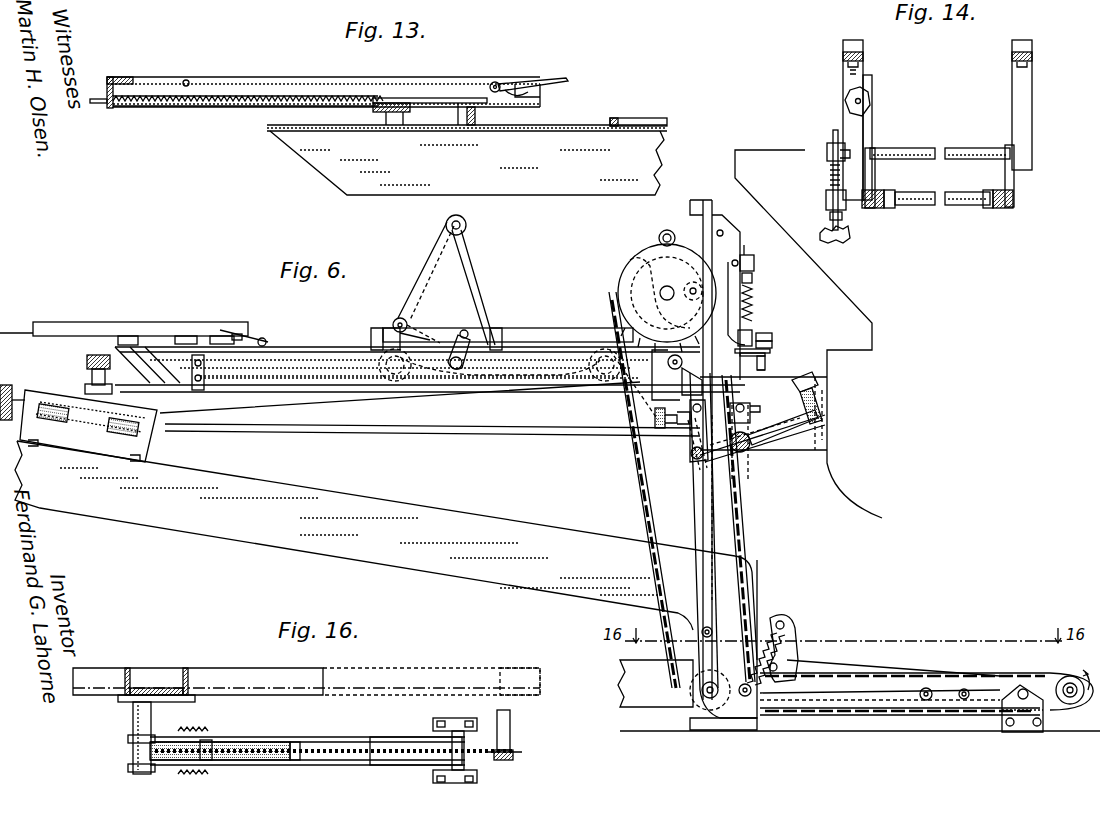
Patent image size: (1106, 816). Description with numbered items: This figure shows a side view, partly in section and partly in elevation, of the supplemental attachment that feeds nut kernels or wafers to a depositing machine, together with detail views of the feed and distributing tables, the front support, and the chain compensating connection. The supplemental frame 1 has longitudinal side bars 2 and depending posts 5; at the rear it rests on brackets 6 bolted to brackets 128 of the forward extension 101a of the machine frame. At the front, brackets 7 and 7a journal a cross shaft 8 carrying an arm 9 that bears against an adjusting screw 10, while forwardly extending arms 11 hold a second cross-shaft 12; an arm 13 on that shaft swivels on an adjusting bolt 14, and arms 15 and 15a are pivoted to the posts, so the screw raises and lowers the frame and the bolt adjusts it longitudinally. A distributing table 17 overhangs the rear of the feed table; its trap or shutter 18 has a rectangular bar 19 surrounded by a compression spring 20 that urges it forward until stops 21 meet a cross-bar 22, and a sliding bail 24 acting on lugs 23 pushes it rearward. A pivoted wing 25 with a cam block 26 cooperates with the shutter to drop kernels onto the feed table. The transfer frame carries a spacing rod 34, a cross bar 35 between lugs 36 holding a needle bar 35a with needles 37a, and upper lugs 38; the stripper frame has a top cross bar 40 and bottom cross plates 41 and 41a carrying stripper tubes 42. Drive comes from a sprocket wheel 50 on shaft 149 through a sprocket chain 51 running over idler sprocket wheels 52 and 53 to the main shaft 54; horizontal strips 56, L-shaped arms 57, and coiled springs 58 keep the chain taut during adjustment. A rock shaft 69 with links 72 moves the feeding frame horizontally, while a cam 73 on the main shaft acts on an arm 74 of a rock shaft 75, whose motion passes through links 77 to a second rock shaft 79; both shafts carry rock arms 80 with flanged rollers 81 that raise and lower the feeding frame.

In FIG. 6, the supplemental frame 1 is at (318, 347).
In FIG. 13, the longitudinal side bars 2 is at (366, 185).
In FIG. 6, the longitudinal side bars 2 is at (292, 372).
In FIG. 14, the depending posts 5 is at (875, 209).
In FIG. 6, the brackets 6 is at (160, 388).
In FIG. 14, the bracket 7 is at (848, 125).
In FIG. 6, the bracket 7 is at (770, 432).
In FIG. 14, the bracket 7a is at (1032, 117).
In FIG. 6, the bracket 7a is at (814, 455).
In FIG. 14, the cross shaft 8 is at (950, 148).
In FIG. 6, the cross shaft 8 is at (742, 455).
In FIG. 14, the arm 9 is at (870, 88).
In FIG. 6, the arm 9 is at (760, 448).
In FIG. 14, the adjusting screw 10 is at (866, 100).
In FIG. 6, the adjusting screw 10 is at (804, 400).
In FIG. 14, the forwardly extending arms 11 is at (872, 178).
In FIG. 6, the forwardly extending arms 11 is at (718, 465).
In FIG. 14, the second cross-shaft 12 is at (930, 206).
In FIG. 6, the second cross-shaft 12 is at (695, 460).
In FIG. 14, the arm 13 is at (846, 215).
In FIG. 14, the adjusting bolt 14 is at (832, 138).
In FIG. 6, the adjusting bolt 14 is at (758, 410).
In FIG. 14, the arm 15 is at (889, 209).
In FIG. 6, the arm 15 is at (690, 445).
In FIG. 14, the arm 15a is at (988, 209).
In FIG. 13, the distributing table 17 is at (240, 79).
In FIG. 6, the distributing table 17 is at (133, 322).
In FIG. 13, the trap or shutter 18 is at (543, 100).
In FIG. 13, the rectangular bar 19 is at (458, 125).
In FIG. 13, the compression spring 20 is at (212, 107).
In FIG. 6, the compression spring 20 is at (28, 326).
In FIG. 13, the stops 21 is at (374, 111).
In FIG. 6, the stops 21 is at (168, 343).
In FIG. 13, the cross-bar 22 is at (410, 106).
In FIG. 6, the cross-bar 22 is at (182, 336).
In FIG. 13, the lugs 23 is at (477, 120).
In FIG. 6, the lugs 23 is at (220, 336).
In FIG. 13, the sliding bail 24 is at (624, 118).
In FIG. 6, the sliding bail 24 is at (204, 347).
In FIG. 13, the pivoted wing 25 is at (530, 86).
In FIG. 6, the pivoted wing 25 is at (248, 332).
In FIG. 13, the cam block 26 is at (540, 89).
In FIG. 6, the cam block 26 is at (240, 347).
In FIG. 6, the spacing rod 34 is at (724, 233).
In FIG. 6, the cross bar 35 is at (773, 337).
In FIG. 6, the needle bar 35a is at (773, 346).
In FIG. 6, the lugs 36 is at (755, 335).
In FIG. 6, the needles 37a is at (763, 370).
In FIG. 6, the lugs 38 is at (755, 262).
In FIG. 6, the top cross bar 40 is at (753, 279).
In FIG. 6, the bottom cross plate 41 is at (741, 354).
In FIG. 6, the bottom cross plate 41a is at (755, 369).
In FIG. 6, the stripper tubes 42 is at (766, 364).
In FIG. 6, the sprocket wheel 50 is at (1055, 684).
In FIG. 16, the sprocket wheel 50 is at (516, 757).
In FIG. 6, the sprocket chain 51 is at (1055, 708).
In FIG. 16, the sprocket chain 51 is at (398, 748).
In FIG. 6, the idler sprocket wheel 52 is at (713, 722).
In FIG. 16, the idler sprocket wheel 52 is at (130, 752).
In FIG. 6, the idler sprocket wheel 53 is at (795, 655).
In FIG. 16, the idler sprocket wheel 53 is at (220, 745).
In FIG. 6, the main shaft 54 is at (660, 294).
In FIG. 6, the horizontal strips 56 is at (980, 690).
In FIG. 16, the horizontal strips 56 is at (304, 738).
In FIG. 6, the L-shaped arms 57 is at (815, 665).
In FIG. 16, the L-shaped arms 57 is at (252, 750).
In FIG. 6, the coiled springs 58 is at (765, 640).
In FIG. 16, the coiled springs 58 is at (200, 728).
In FIG. 6, the rock shaft 69 is at (470, 226).
In FIG. 6, the links 72 is at (418, 325).
In FIG. 6, the cam 73 is at (615, 272).
In FIG. 6, the arm 74 is at (680, 375).
In FIG. 6, the rock shaft 75 is at (696, 381).
In FIG. 6, the links 77 is at (533, 328).
In FIG. 6, the second rock shaft 79 is at (458, 370).
In FIG. 6, the rock arms 80 is at (428, 380).
In FIG. 6, the flanged rollers 81 is at (379, 367).
In FIG. 6, the forward extension 101a is at (146, 478).
In FIG. 16, the forward extension 101a is at (97, 670).
In FIG. 6, the brackets 128 is at (35, 392).
In FIG. 6, the shaft 149 is at (1070, 676).